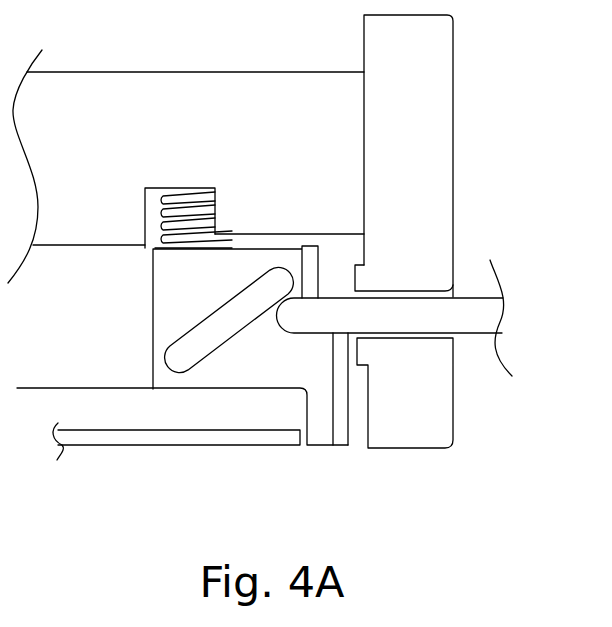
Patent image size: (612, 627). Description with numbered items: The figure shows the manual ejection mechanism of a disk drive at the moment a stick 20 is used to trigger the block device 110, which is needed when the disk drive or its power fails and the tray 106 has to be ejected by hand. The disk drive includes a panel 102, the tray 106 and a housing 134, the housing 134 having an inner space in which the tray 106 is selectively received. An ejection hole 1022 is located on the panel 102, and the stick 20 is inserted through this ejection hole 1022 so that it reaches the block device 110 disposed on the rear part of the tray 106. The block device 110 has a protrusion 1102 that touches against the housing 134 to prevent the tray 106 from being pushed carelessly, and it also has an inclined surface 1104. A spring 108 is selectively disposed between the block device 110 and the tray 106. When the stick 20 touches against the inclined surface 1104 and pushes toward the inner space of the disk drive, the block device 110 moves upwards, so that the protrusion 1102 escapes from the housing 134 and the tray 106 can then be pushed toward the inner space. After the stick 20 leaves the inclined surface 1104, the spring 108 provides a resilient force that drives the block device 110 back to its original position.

The stick 20 is at (500, 318).
The panel 102 is at (438, 66).
The tray 106 is at (143, 92).
The spring 108 is at (162, 243).
The block device 110 is at (160, 312).
The housing 134 is at (97, 442).
The ejection hole 1022 is at (455, 338).
The protrusion 1102 is at (323, 437).
The inclined surface 1104 is at (212, 338).